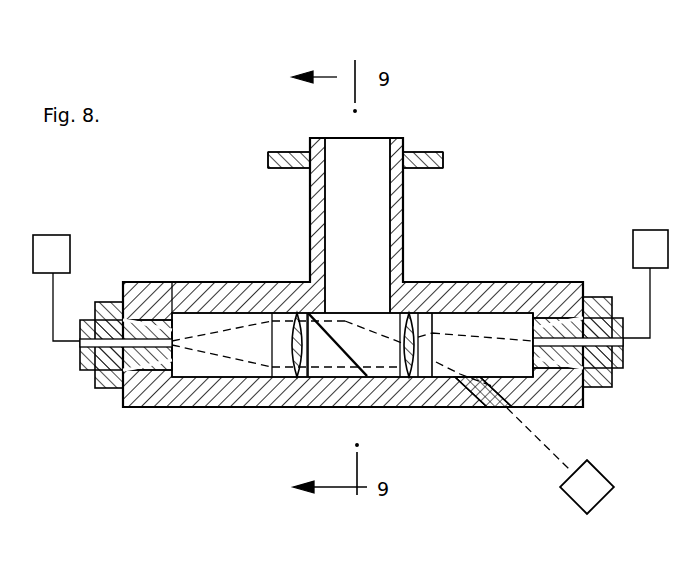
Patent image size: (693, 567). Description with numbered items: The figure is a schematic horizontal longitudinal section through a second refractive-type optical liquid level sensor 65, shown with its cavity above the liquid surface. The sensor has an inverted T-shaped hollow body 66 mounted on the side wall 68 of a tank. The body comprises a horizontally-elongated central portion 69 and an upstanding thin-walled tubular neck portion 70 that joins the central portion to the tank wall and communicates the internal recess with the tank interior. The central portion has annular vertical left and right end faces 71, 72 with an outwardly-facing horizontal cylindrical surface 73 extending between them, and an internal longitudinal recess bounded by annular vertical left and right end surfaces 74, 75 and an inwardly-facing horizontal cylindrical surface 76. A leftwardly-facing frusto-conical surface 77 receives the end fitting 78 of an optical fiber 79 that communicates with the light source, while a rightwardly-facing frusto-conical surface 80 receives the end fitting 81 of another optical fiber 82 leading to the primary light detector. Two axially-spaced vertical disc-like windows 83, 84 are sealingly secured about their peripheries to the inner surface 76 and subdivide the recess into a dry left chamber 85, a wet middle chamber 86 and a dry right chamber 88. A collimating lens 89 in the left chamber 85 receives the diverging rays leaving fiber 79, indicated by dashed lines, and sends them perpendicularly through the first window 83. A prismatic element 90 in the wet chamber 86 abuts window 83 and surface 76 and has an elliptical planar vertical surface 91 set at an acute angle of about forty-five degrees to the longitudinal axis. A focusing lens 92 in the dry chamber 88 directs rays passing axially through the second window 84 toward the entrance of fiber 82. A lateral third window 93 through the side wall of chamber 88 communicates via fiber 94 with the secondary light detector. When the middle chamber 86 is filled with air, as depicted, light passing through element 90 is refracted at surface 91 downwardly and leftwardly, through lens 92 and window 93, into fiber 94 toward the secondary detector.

The second refractive-type optical liquid level sensor 65 is at (498, 183).
The inverted T-shaped hollow body 66 is at (177, 414).
The side wall 68 is at (288, 155).
The central portion 69 is at (288, 408).
The neck portion 70 is at (312, 202).
The left end face 71 is at (116, 311).
The right end face 72 is at (576, 324).
The outwardly-facing horizontal cylindrical surface 73 is at (208, 282).
The left end surface 74 is at (186, 282).
The right end surface 75 is at (528, 312).
The inwardly-facing horizontal cylindrical surface 76 is at (444, 312).
The frusto-conical surface 77 is at (150, 316).
The end fitting 78 is at (92, 306).
The optical fiber 79 is at (52, 341).
The frusto-conical surface 80 is at (563, 407).
The end fitting 81 is at (598, 395).
The optical fiber 82 is at (656, 322).
The first window 83 is at (322, 322).
The second window 84 is at (422, 338).
The dry left chamber 85 is at (248, 353).
The wet middle chamber 86 is at (394, 368).
The dry right chamber 88 is at (514, 336).
The collimating lens 89 is at (284, 328).
The prismatic element 90 is at (316, 336).
The planar vertical surface 91 is at (350, 333).
The focusing lens 92 is at (446, 360).
The third window 93 is at (485, 408).
The fiber 94 is at (538, 443).